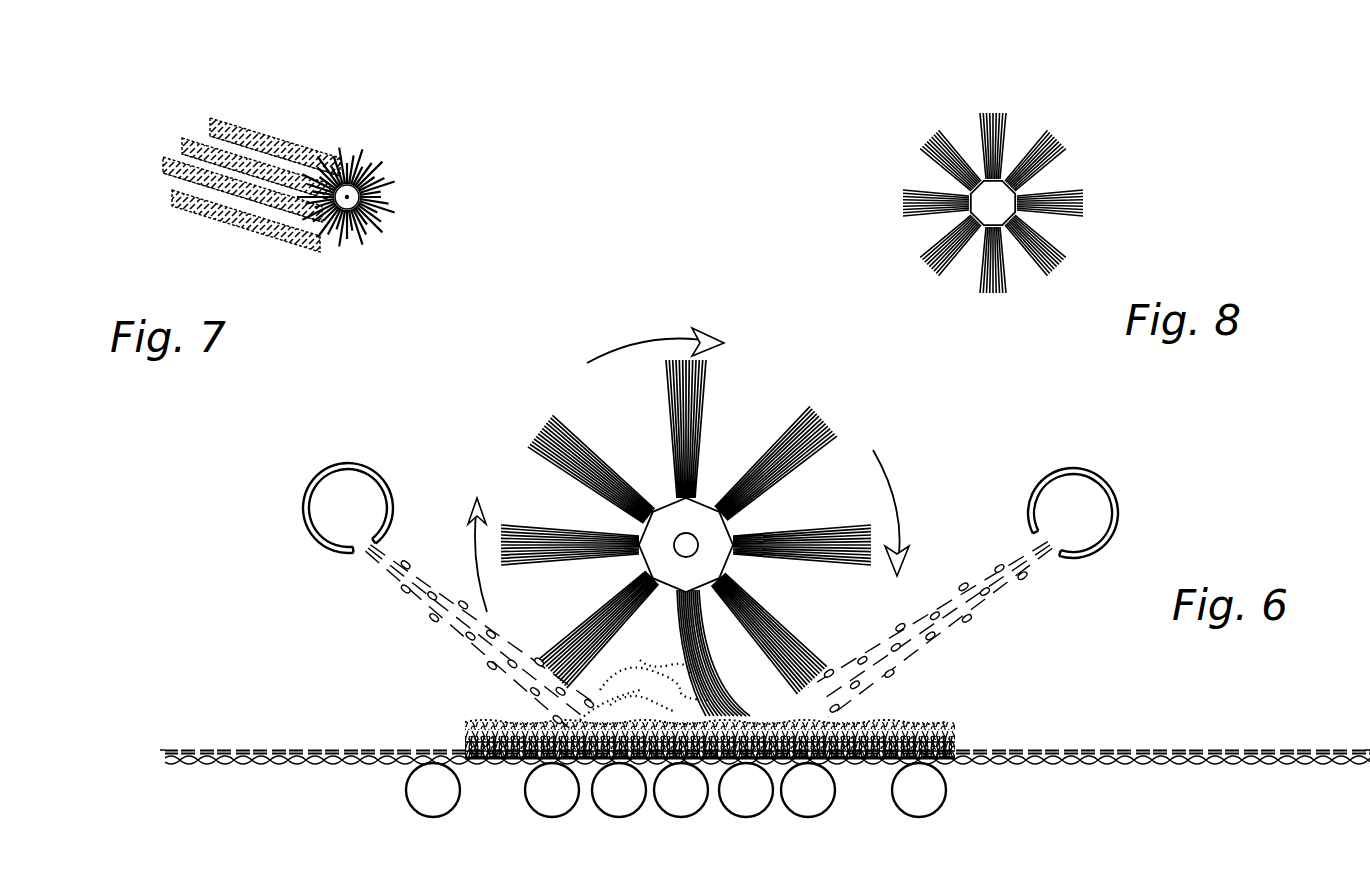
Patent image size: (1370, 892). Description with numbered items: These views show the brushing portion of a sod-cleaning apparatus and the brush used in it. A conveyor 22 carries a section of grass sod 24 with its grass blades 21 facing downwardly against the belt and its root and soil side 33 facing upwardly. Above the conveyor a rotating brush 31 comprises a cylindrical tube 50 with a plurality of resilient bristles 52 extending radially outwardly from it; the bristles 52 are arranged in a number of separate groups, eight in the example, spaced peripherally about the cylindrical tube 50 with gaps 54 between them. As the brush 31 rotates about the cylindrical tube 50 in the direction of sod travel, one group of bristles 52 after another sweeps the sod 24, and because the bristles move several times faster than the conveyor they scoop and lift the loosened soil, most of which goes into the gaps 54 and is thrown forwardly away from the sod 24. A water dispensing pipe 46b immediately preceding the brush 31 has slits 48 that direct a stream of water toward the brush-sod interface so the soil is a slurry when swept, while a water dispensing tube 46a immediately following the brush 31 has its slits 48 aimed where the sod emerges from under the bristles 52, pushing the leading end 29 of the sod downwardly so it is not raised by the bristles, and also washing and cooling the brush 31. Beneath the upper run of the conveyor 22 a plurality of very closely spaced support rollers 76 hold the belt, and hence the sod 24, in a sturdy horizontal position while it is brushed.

In FIG. 6, the grass blades 21 is at (858, 762).
In FIG. 6, the conveyor 22 is at (298, 764).
In FIG. 6, the section of grass sod 24 is at (958, 718).
In FIG. 6, the leading end of the sod 29 is at (450, 740).
In FIG. 7, the rotating brush 31 is at (430, 176).
In FIG. 8, the rotating brush 31 is at (1162, 90).
In FIG. 6, the rotating brush 31 is at (842, 352).
In FIG. 6, the root and soil side 33 is at (923, 727).
In FIG. 6, the water dispensing tube 46a is at (347, 465).
In FIG. 6, the water dispensing pipe 46b is at (1105, 483).
In FIG. 6, the slits 48 is at (376, 540).
In FIG. 7, the cylindrical tube 50 is at (362, 205).
In FIG. 8, the cylindrical tube 50 is at (1060, 183).
In FIG. 6, the cylindrical tube 50 is at (717, 535).
In FIG. 7, the resilient bristles 52 is at (190, 130).
In FIG. 8, the resilient bristles 52 is at (926, 135).
In FIG. 6, the resilient bristles 52 is at (566, 416).
In FIG. 7, the gaps 54 is at (202, 128).
In FIG. 8, the gaps 54 is at (965, 135).
In FIG. 6, the gaps 54 is at (650, 452).
In FIG. 6, the support rollers 76 is at (445, 800).